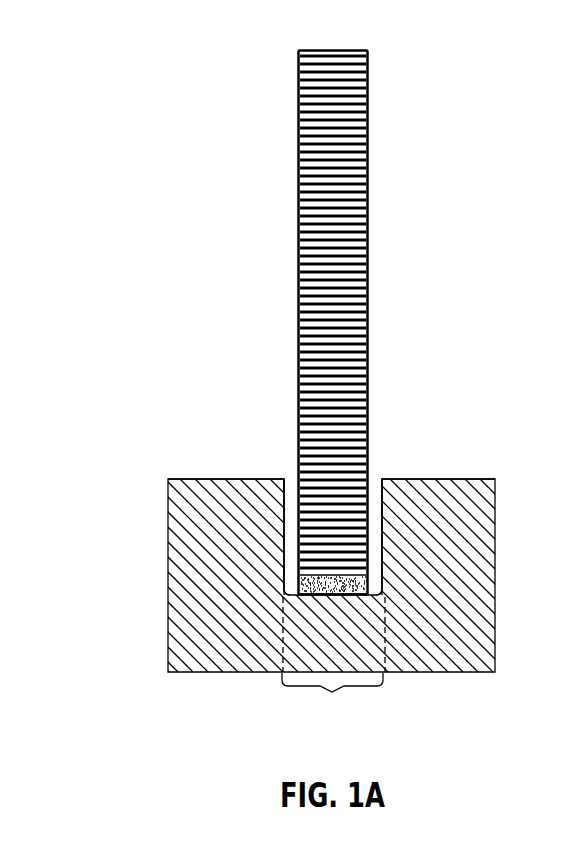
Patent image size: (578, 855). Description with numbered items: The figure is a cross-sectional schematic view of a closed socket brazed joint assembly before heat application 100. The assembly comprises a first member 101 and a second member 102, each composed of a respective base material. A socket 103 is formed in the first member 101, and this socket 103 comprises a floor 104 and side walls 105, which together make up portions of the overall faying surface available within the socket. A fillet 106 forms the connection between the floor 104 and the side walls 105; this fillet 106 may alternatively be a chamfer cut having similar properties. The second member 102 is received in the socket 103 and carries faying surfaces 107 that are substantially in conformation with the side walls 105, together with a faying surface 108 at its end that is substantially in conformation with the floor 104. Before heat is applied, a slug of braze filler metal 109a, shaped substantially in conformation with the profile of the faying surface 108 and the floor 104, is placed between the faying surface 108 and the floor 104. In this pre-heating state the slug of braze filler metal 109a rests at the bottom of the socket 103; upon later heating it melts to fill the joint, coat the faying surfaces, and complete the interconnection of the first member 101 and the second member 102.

The closed socket brazed joint assembly before heat application 100 is at (289, 371).
The first member 101 is at (289, 576).
The second member 102 is at (263, 384).
The socket 103 is at (332, 692).
The floor 104 is at (366, 600).
The side walls 105 is at (277, 508).
The fillet 106 is at (386, 594).
The faying surfaces 107 is at (298, 455).
The faying surface 108 is at (340, 576).
The slug of BFM 109a is at (290, 593).